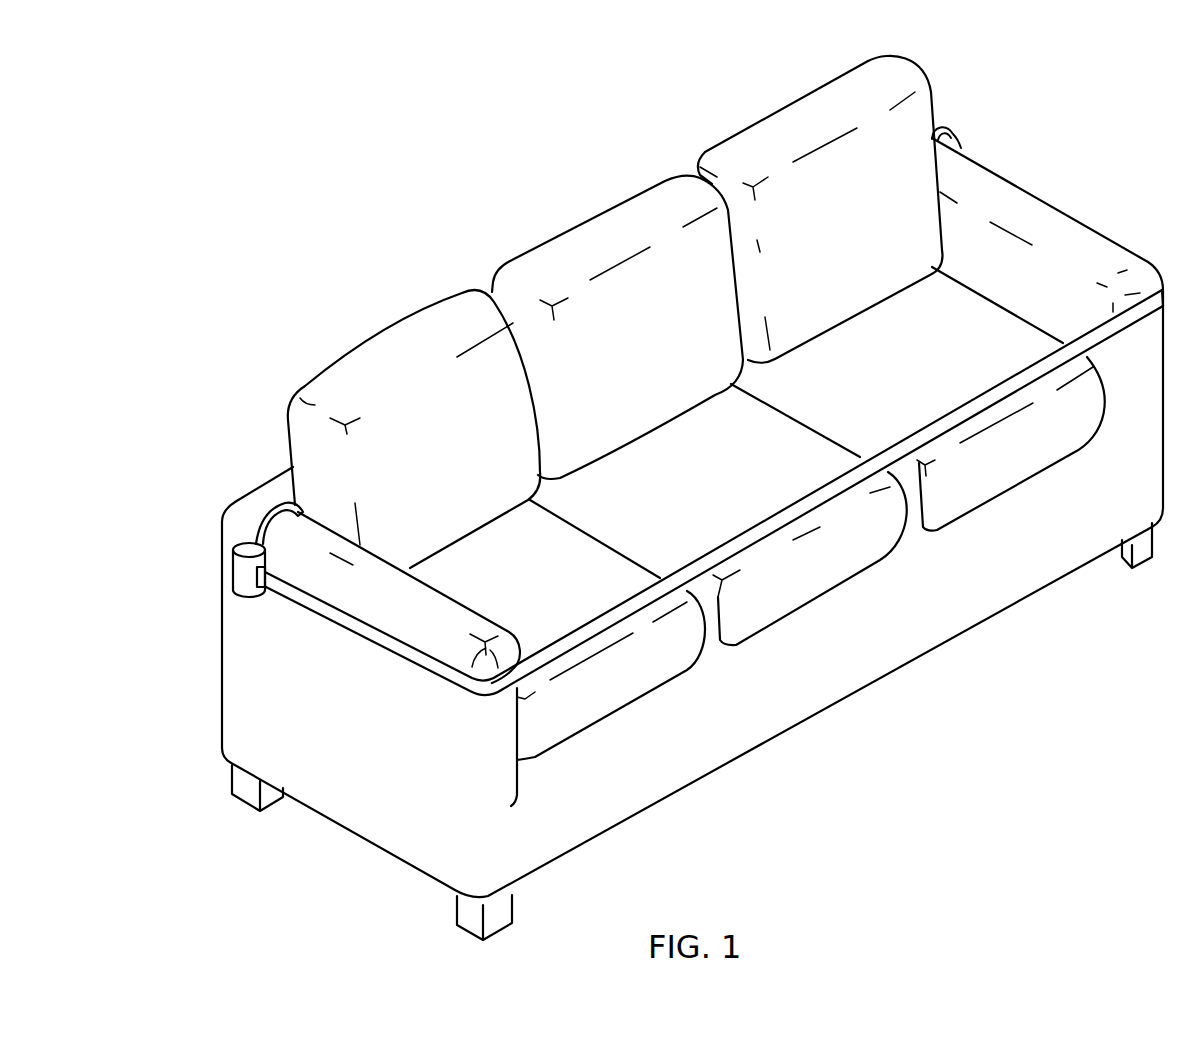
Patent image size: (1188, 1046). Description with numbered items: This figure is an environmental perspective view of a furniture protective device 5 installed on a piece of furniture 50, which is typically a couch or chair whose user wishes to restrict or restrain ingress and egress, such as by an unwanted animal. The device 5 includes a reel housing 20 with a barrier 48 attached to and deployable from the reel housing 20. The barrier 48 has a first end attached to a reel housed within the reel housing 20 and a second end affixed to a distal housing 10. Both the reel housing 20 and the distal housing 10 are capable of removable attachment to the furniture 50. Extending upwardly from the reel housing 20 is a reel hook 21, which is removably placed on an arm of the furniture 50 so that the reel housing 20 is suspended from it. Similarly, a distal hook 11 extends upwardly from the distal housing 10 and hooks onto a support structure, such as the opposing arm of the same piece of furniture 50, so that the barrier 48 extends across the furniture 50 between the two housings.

The furniture protective device 5 is at (338, 204).
The distal housing 10 is at (983, 110).
The distal hook 11 is at (952, 133).
The reel housing 20 is at (208, 560).
The reel hook 21 is at (275, 510).
The barrier 48 is at (812, 500).
The piece of furniture 50 is at (420, 440).